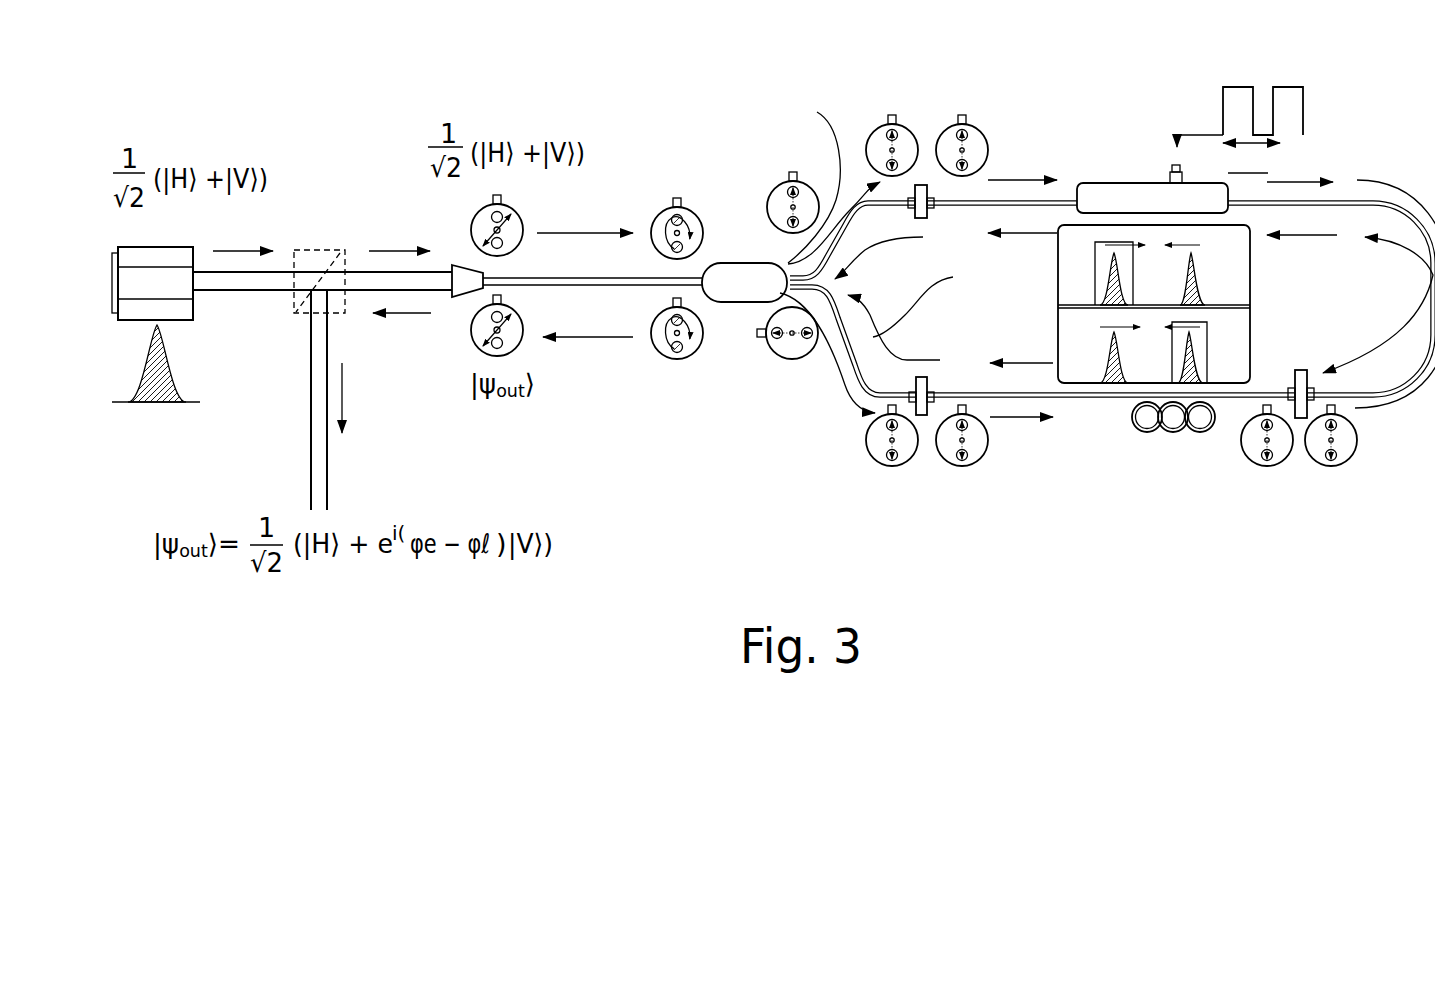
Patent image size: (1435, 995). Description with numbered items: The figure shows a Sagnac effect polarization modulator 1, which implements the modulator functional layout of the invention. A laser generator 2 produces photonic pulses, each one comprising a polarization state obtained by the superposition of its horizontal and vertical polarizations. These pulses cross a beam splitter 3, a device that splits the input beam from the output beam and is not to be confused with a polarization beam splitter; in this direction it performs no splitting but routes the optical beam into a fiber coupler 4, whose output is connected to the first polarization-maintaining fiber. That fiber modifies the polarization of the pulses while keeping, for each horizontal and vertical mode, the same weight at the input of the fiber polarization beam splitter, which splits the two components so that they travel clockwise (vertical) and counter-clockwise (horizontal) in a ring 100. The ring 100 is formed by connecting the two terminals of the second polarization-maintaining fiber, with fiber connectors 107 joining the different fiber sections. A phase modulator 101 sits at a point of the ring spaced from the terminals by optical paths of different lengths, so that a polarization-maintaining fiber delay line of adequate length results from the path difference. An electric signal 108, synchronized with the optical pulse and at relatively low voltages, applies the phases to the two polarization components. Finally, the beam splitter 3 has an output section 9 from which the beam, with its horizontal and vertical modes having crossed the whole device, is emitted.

The polarization modulator 1 is at (743, 455).
The laser generator 2 is at (180, 321).
The beam splitter 3 is at (343, 314).
The fiber coupler 4 is at (455, 272).
The output section 9 is at (318, 314).
The ring 100 is at (1022, 325).
The phase modulator 101 is at (1118, 185).
The fiber connectors 107 is at (922, 195).
The electric signal 108 is at (1223, 90).